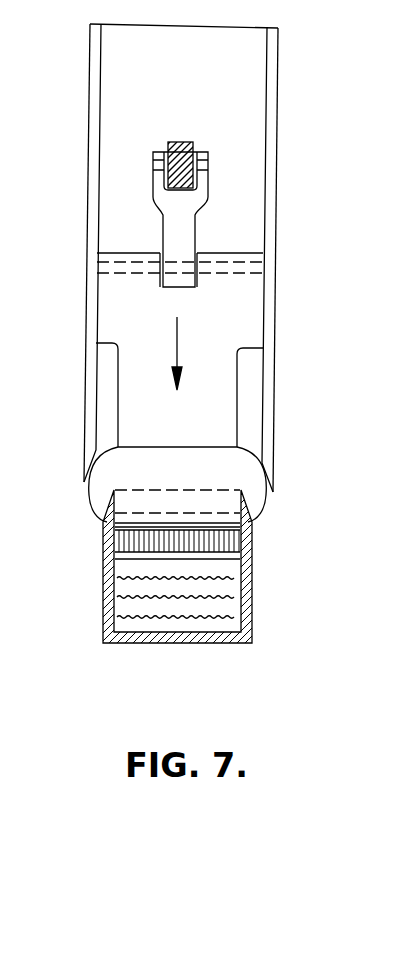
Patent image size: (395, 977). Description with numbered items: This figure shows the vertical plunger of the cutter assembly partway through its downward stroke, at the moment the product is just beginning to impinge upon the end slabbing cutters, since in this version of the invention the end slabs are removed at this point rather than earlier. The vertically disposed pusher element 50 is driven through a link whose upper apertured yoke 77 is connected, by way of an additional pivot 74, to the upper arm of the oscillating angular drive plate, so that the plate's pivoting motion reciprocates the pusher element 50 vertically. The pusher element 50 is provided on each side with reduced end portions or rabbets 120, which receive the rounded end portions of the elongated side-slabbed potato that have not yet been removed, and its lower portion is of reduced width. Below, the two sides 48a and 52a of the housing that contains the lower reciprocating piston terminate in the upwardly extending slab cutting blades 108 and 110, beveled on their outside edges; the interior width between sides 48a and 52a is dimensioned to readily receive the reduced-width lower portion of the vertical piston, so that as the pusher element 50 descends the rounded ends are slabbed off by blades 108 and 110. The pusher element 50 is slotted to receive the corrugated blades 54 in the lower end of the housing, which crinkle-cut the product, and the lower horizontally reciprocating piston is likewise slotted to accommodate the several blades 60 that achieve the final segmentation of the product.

The vertically disposed pusher element 50 is at (248, 314).
The additional pivot 74 is at (183, 163).
The upper apertured yoke 77 is at (203, 183).
The reduced end portions or rabbets 120 is at (118, 378).
The slab cutting blade 108 is at (104, 516).
The slab cutting blade 110 is at (250, 513).
The side of the housing 48a is at (108, 590).
The corrugated blades 54 is at (113, 547).
The blades 60 is at (238, 578).
The side of the housing 52a is at (244, 597).